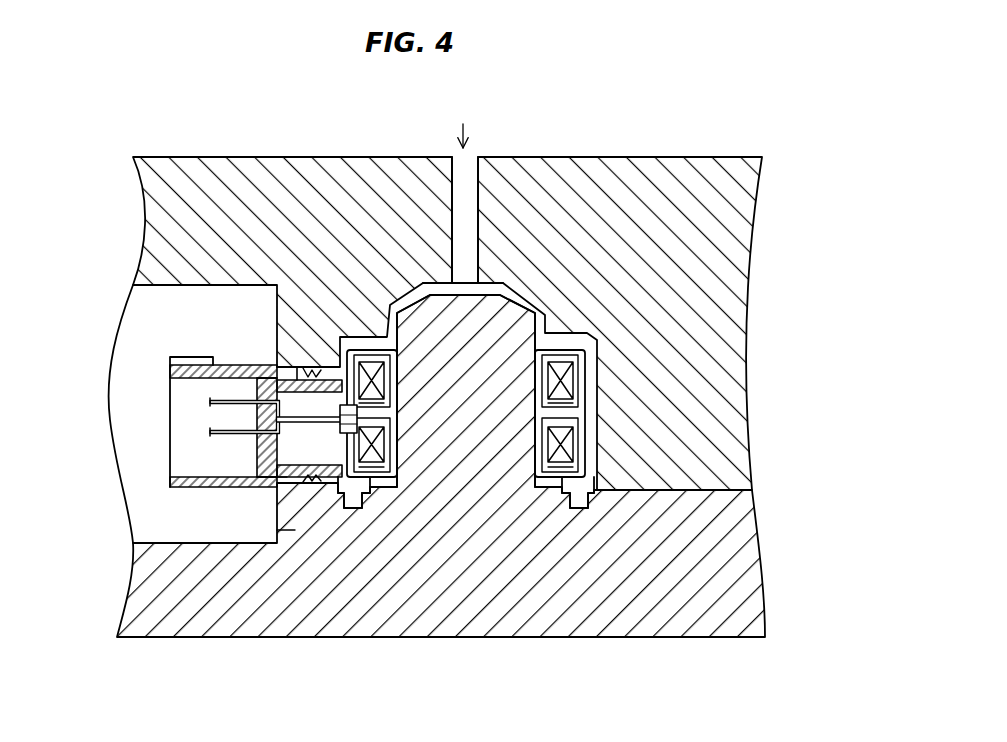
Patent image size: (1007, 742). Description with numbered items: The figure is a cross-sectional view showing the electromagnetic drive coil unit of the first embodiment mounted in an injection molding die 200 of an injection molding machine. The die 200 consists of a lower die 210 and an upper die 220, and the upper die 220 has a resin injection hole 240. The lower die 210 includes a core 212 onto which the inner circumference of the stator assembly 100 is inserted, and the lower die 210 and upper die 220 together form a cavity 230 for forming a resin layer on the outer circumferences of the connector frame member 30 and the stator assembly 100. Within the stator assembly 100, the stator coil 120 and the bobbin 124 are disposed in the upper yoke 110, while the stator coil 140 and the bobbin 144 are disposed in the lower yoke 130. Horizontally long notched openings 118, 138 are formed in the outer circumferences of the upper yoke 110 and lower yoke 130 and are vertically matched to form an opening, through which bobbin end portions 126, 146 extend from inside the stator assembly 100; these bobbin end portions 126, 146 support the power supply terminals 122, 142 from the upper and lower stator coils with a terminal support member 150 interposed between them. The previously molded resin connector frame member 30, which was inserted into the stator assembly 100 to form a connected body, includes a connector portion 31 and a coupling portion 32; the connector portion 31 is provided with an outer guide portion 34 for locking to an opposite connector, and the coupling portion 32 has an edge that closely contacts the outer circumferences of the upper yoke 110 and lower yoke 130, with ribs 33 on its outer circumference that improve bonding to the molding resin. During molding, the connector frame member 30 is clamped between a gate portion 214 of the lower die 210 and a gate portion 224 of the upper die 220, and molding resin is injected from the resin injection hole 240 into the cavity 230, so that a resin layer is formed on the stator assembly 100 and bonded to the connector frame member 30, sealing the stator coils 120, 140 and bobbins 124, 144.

The die 200 is at (843, 395).
The upper die 220 is at (643, 177).
The lower die 210 is at (740, 567).
The core 212 is at (513, 330).
The gate portion of the lower die 214 is at (268, 470).
The gate portion of the upper die 224 is at (274, 380).
The cavity 230 is at (467, 292).
The resin injection hole 240 is at (450, 158).
The stator assembly 100 is at (571, 479).
The upper yoke 110 is at (584, 368).
The stator coil 120 is at (566, 383).
The bobbin 124 is at (570, 403).
The lower yoke 130 is at (584, 433).
The stator coil 140 is at (563, 447).
The bobbin 144 is at (570, 467).
The terminal support member 150 is at (358, 474).
The connector frame member 30 is at (191, 417).
The connector portion 31 is at (300, 436).
The coupling portion 32 is at (295, 530).
The ribs 33 is at (287, 478).
The outer guide portion 34 is at (222, 366).
The notched opening 118 is at (273, 388).
The power supply terminal 122 is at (210, 402).
The bobbin end portion 126 is at (340, 408).
The notched opening 138 is at (315, 421).
The power supply terminal 142 is at (210, 432).
The bobbin end portion 146 is at (340, 428).